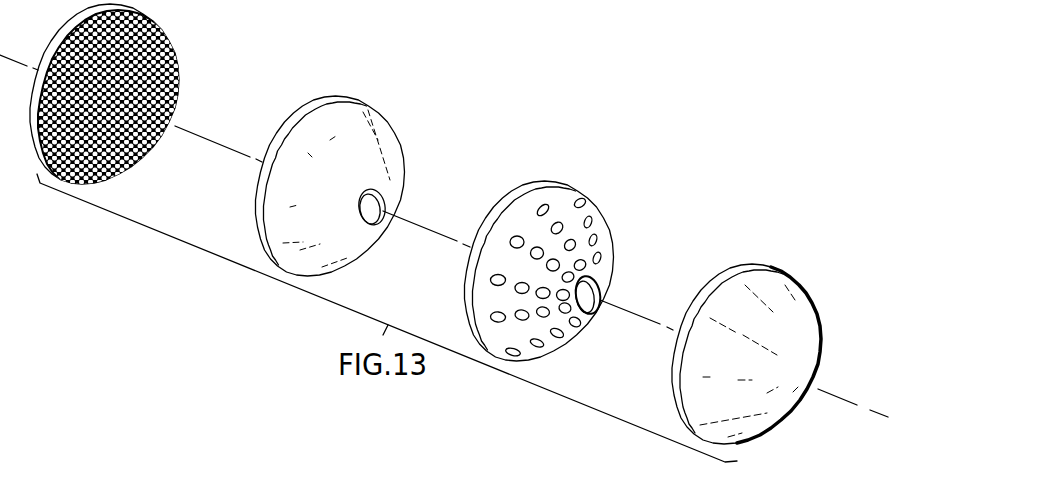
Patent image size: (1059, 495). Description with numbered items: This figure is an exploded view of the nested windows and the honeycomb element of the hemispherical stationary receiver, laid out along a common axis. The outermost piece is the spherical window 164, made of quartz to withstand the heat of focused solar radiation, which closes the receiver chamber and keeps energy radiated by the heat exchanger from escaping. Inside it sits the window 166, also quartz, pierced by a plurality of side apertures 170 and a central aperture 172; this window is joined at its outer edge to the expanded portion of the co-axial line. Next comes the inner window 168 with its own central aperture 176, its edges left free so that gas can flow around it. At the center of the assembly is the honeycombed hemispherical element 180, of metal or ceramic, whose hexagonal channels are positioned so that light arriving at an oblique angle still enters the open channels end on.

The honeycombed hemispherical element 180 is at (167, 57).
The inner window 168 is at (397, 165).
The central aperture 176 is at (383, 200).
The window 166 is at (563, 192).
The side apertures 170 is at (572, 242).
The central aperture 172 is at (598, 288).
The spherical window 164 is at (768, 275).